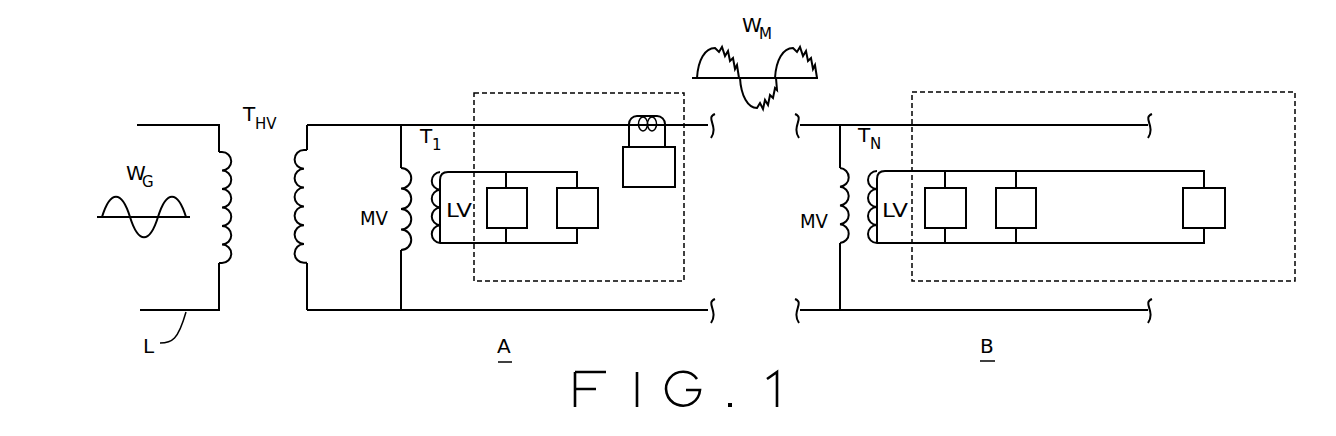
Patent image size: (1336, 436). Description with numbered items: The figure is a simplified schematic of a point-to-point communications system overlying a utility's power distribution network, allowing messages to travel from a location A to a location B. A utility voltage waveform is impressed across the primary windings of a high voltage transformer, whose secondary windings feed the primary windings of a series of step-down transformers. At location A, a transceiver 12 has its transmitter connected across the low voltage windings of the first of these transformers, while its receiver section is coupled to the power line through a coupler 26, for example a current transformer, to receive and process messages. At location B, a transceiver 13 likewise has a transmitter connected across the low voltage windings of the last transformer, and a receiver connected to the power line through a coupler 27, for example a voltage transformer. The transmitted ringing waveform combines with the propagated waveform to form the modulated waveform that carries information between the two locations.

The transceiver 12 is at (558, 157).
The transceiver 13 is at (1081, 162).
The coupler 26 is at (650, 115).
The coupler 27 is at (1215, 187).